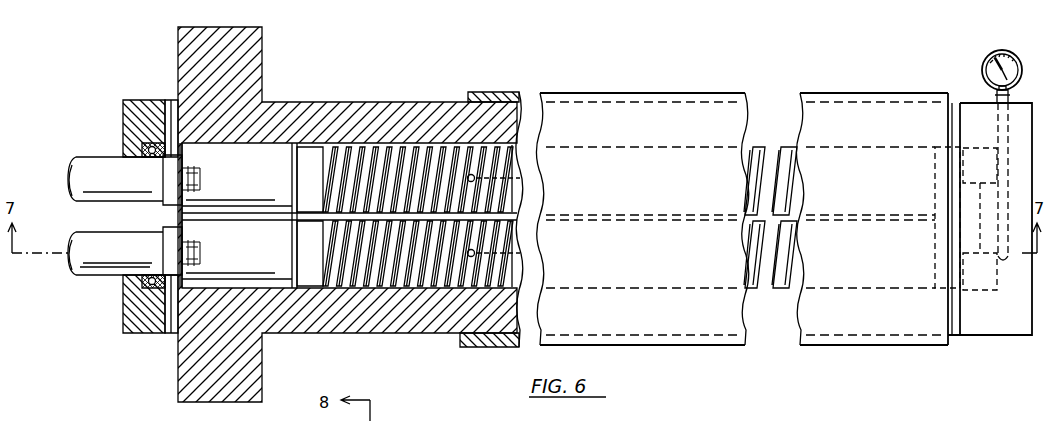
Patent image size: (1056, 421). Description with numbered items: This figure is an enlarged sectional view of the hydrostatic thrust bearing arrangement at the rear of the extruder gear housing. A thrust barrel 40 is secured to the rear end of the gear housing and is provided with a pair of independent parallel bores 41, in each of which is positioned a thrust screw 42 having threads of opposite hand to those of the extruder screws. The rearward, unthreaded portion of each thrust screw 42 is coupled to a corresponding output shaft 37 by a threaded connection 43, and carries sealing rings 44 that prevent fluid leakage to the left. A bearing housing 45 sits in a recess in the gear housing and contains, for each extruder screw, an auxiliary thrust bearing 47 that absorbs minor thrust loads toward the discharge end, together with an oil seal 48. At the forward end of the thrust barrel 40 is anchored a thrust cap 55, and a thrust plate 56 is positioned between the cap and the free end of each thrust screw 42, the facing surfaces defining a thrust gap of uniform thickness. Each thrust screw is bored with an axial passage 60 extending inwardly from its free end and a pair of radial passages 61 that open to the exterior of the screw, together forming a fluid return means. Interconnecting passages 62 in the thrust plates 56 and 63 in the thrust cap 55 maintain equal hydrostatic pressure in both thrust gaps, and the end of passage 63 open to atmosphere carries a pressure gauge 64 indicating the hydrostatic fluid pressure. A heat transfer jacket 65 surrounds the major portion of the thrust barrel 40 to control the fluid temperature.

The output shaft 37 is at (86, 162).
The thrust barrel 40 is at (296, 110).
The bore 41 is at (383, 152).
The thrust screw 42 is at (315, 152).
The threaded connection 43 is at (203, 178).
The sealing ring 44 is at (292, 143).
The bearing housing 45 is at (123, 103).
The auxiliary thrust bearing 47 is at (143, 133).
The oil seal 48 is at (163, 100).
The thrust cap 55 is at (978, 328).
The thrust plate 56 is at (968, 148).
The axial passage 60 is at (508, 180).
The radial passage 61 is at (468, 176).
The interconnecting passage 62 is at (988, 177).
The interconnecting passage 63 is at (1002, 160).
The pressure gauge 64 is at (989, 52).
The heat transfer jacket 65 is at (678, 93).